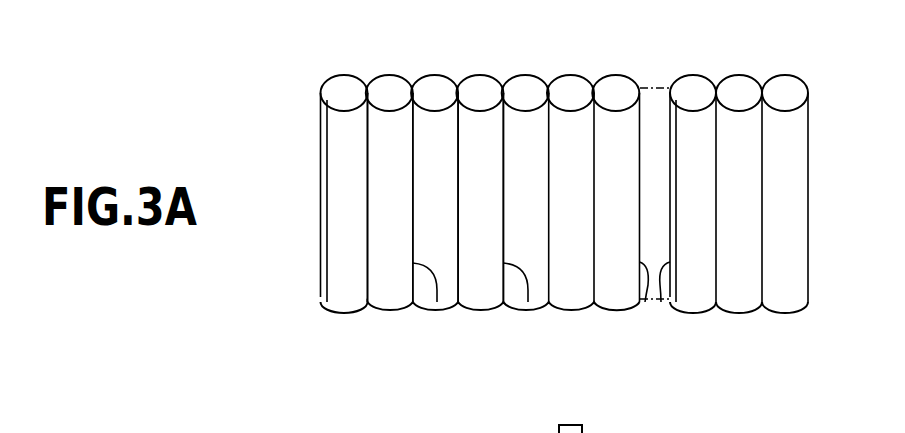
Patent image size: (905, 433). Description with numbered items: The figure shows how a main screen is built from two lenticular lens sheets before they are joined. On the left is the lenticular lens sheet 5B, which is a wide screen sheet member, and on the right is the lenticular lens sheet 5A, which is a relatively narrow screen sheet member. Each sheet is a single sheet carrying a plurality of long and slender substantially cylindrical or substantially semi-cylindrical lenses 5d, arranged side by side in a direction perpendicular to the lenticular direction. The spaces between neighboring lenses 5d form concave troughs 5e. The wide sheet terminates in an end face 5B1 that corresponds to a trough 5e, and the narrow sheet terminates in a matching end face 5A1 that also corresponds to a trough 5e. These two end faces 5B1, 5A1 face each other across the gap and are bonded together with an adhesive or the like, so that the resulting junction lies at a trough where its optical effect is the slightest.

The lenticular lens sheet 5A is at (808, 58).
The lenticular lens sheet 5B is at (636, 58).
The lenses 5d is at (479, 333).
The concave troughs 5e is at (528, 336).
The end face 5A1 is at (661, 302).
The end face 5B1 is at (645, 302).